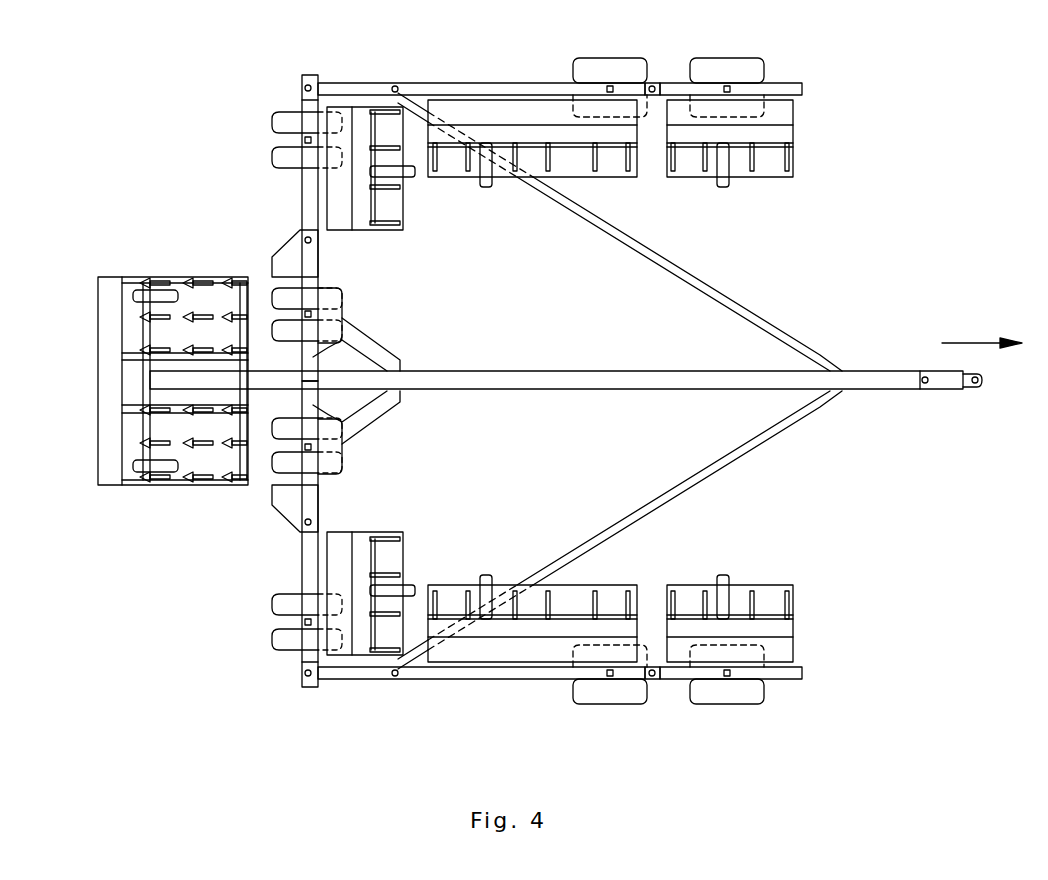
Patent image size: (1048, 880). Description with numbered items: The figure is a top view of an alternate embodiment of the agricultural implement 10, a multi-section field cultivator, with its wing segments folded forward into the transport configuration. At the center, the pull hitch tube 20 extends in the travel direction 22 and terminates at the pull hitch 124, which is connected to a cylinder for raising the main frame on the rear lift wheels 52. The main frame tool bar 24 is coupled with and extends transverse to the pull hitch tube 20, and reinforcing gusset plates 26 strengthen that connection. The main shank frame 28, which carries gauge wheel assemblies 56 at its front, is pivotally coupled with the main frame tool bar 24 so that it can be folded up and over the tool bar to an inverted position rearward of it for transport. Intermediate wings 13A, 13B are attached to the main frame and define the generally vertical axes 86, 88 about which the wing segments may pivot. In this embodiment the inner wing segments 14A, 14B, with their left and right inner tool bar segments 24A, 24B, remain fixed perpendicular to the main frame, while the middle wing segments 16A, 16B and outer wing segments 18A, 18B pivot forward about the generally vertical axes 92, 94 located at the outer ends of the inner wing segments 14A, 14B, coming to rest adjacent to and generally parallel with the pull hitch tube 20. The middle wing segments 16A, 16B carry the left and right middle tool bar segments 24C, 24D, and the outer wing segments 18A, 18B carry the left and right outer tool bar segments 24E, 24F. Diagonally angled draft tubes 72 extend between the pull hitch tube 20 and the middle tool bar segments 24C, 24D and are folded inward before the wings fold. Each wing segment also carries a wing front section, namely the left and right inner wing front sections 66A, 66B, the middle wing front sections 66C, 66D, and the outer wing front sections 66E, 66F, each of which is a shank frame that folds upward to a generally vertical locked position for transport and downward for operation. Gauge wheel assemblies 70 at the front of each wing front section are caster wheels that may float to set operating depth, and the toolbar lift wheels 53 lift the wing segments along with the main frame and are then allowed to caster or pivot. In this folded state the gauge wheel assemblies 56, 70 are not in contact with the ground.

The agricultural implement 10 is at (130, 205).
The intermediate wing 13A is at (312, 260).
The intermediate wing 13B is at (312, 503).
The left inner wing segment 14A is at (302, 182).
The right inner wing segment 14B is at (308, 552).
The left middle wing segment 16A is at (490, 85).
The right middle wing segment 16B is at (455, 680).
The left outer wing segment 18A is at (775, 85).
The right outer wing segment 18B is at (772, 680).
The pull hitch tube 20 is at (610, 372).
The travel direction 22 is at (950, 340).
The main frame tool bar 24 is at (352, 342).
The left inner tool bar segment 24A is at (310, 205).
The right inner tool bar segment 24B is at (310, 582).
The left middle tool bar segment 24C is at (460, 88).
The right middle tool bar segment 24D is at (543, 680).
The left outer tool bar segment 24E is at (805, 88).
The right outer tool bar segment 24F is at (805, 672).
The reinforcing gusset plate 26 is at (392, 365).
The main shank frame 28 is at (170, 487).
The rear lift wheel 52 is at (278, 292).
The toolbar lift wheel 53 is at (275, 120).
The gauge wheel assembly 56 is at (140, 288).
The left inner wing front section 66A is at (405, 228).
The right inner wing front section 66B is at (405, 538).
The left middle wing front section 66C is at (622, 178).
The right middle wing front section 66D is at (618, 585).
The left outer wing front section 66E is at (795, 165).
The right outer wing front section 66F is at (795, 620).
The gauge wheel assembly 70 is at (410, 177).
The diagonally angled draft tube 72 is at (760, 318).
The generally vertical axis 86 is at (306, 240).
The generally vertical axis 88 is at (306, 520).
The generally vertical axis 92 is at (305, 86).
The generally vertical axis 94 is at (305, 675).
The pull hitch 124 is at (952, 392).